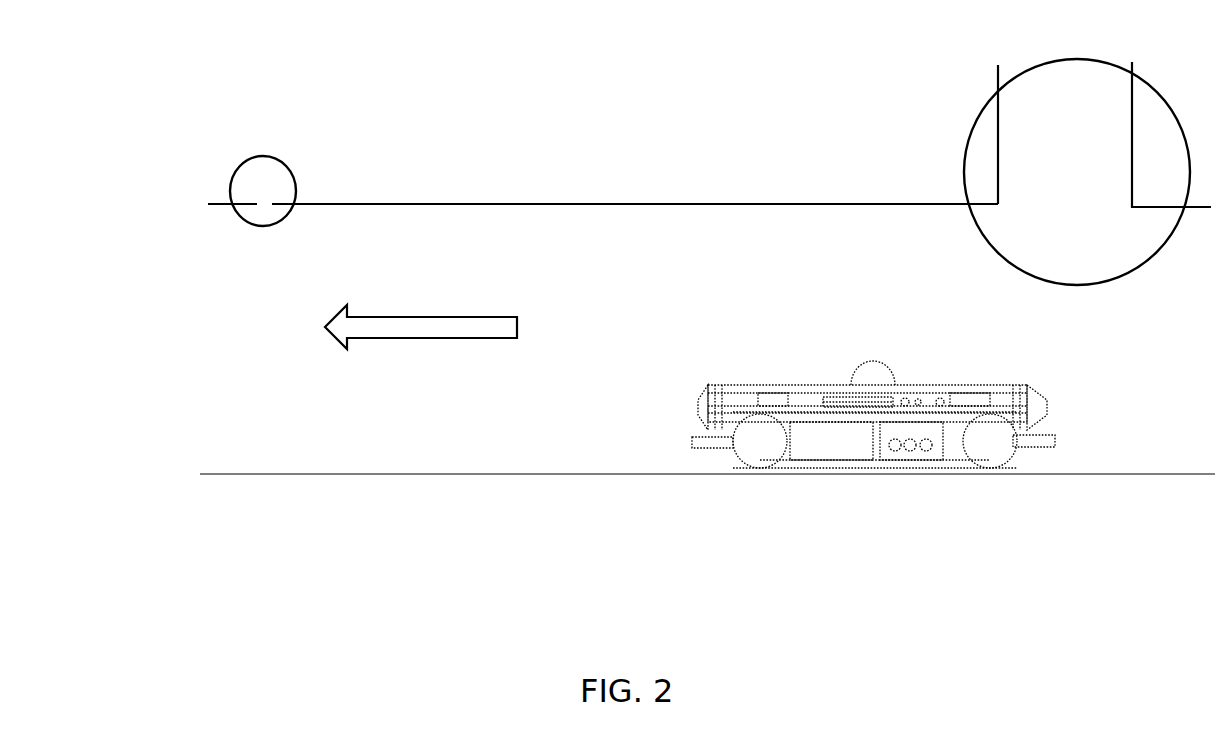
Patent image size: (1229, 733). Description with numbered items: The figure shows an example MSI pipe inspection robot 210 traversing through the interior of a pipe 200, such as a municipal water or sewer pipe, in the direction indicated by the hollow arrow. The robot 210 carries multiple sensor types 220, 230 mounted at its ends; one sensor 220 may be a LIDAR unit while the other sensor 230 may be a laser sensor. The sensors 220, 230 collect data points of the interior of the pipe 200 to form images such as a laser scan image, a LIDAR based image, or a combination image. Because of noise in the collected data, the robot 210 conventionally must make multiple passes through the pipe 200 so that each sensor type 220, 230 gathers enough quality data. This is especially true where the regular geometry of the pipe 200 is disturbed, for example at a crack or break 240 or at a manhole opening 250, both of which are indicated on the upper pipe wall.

The pipe 200 is at (403, 204).
The MSI pipe inspection robot 210 is at (881, 387).
The sensor type 220 is at (700, 408).
The sensor type 230 is at (1048, 410).
The crack or break within the pipe 240 is at (237, 172).
The manhole opening 250 is at (968, 134).